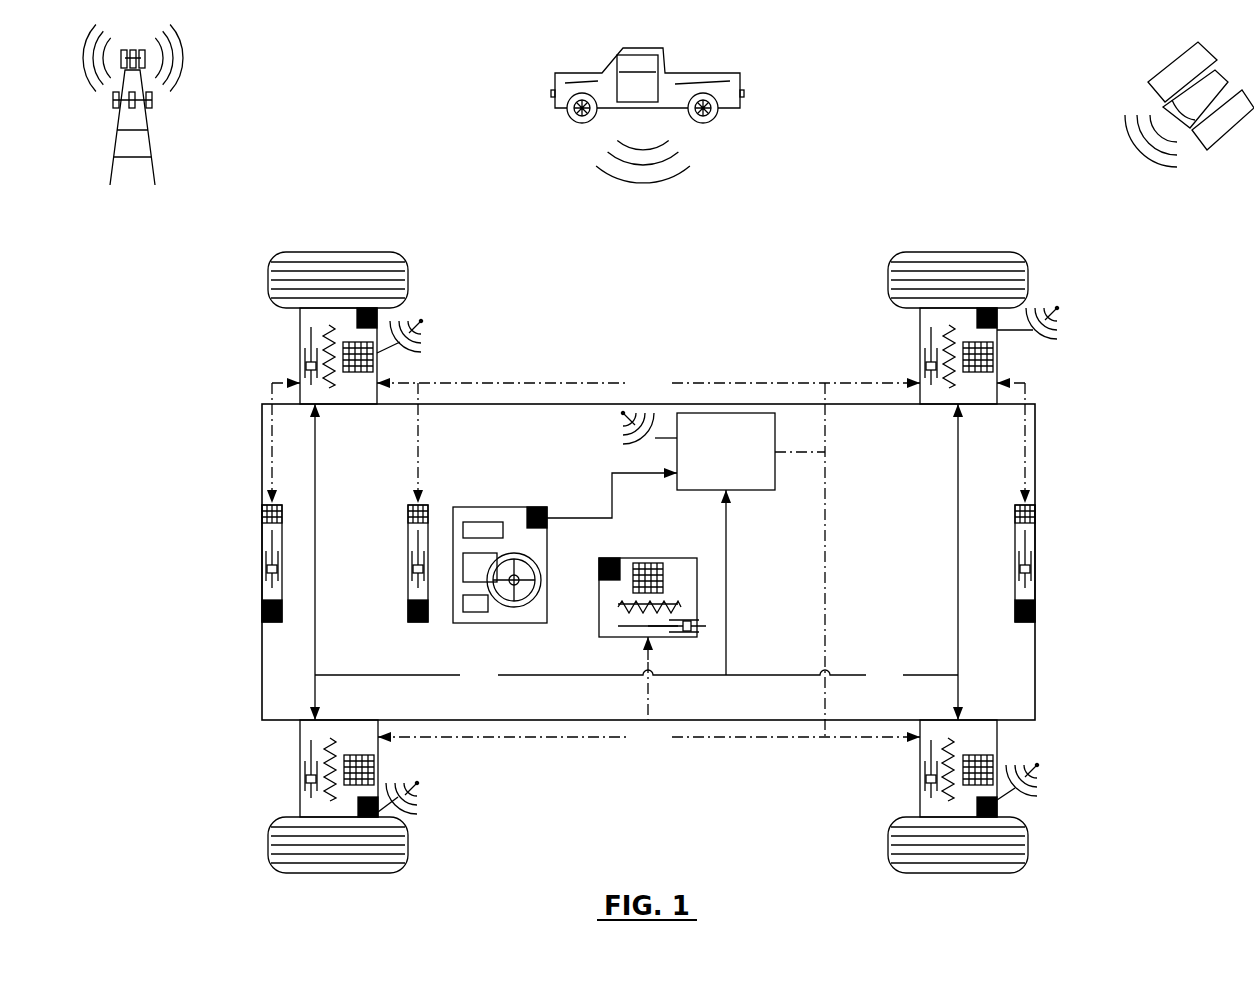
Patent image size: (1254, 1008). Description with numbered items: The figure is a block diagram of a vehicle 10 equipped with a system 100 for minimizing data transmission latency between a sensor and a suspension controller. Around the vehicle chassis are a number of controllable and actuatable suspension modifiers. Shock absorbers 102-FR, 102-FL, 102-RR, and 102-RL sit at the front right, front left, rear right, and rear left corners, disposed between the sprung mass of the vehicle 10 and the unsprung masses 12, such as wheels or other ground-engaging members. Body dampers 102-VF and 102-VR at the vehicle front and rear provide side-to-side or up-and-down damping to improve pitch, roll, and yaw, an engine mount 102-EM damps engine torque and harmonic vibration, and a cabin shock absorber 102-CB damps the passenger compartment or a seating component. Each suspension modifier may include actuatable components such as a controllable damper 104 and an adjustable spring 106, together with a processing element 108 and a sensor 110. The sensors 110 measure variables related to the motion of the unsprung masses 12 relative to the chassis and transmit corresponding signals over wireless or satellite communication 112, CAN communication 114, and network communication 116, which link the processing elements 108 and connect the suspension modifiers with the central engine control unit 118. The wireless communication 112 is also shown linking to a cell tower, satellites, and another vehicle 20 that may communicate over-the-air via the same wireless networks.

The vehicle 10 is at (262, 705).
The unsprung mass 12 is at (930, 252).
The other vehicle 20 is at (678, 80).
The system 100 is at (656, 300).
The front right shock absorber 102-FR is at (300, 315).
The rear right shock absorber 102-RR is at (927, 318).
The front left shock absorber 102-FL is at (312, 808).
The rear left shock absorber 102-RL is at (928, 808).
The vehicle front body damper 102-VF is at (263, 533).
The engine mount 102-EM is at (418, 548).
The vehicle rear body damper 102-VR is at (1035, 545).
The cabin shock absorber 102-CB is at (608, 610).
The controllable damper 104 is at (302, 338).
The adjustable spring 106 is at (328, 330).
The processing element 108 is at (358, 372).
The sensor 110 is at (378, 316).
The wireless or satellite communication 112 is at (151, 140).
The CAN communication 114 is at (636, 562).
The network communication 116 is at (1073, 402).
The central engine control unit 118 is at (713, 473).